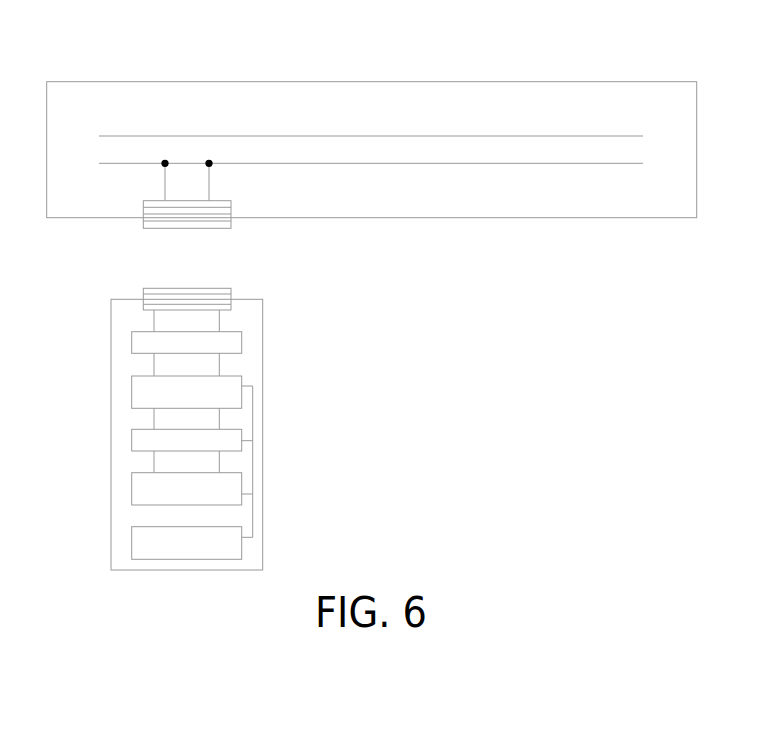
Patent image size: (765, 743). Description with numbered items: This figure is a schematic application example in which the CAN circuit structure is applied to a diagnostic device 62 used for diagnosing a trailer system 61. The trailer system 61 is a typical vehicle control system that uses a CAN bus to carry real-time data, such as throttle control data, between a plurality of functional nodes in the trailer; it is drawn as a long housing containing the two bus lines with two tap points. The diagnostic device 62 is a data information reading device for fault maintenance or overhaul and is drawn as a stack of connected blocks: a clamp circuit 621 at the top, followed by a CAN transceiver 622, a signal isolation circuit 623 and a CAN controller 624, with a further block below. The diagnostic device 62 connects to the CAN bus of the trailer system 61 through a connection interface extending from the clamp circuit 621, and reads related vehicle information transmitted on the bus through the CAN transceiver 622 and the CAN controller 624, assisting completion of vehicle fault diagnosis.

The trailer system 61 is at (154, 82).
The diagnostic device 62 is at (222, 426).
The clamp circuit 621 is at (132, 342).
The CAN transceiver 622 is at (132, 392).
The signal isolation circuit 623 is at (132, 440).
The CAN controller 624 is at (132, 494).